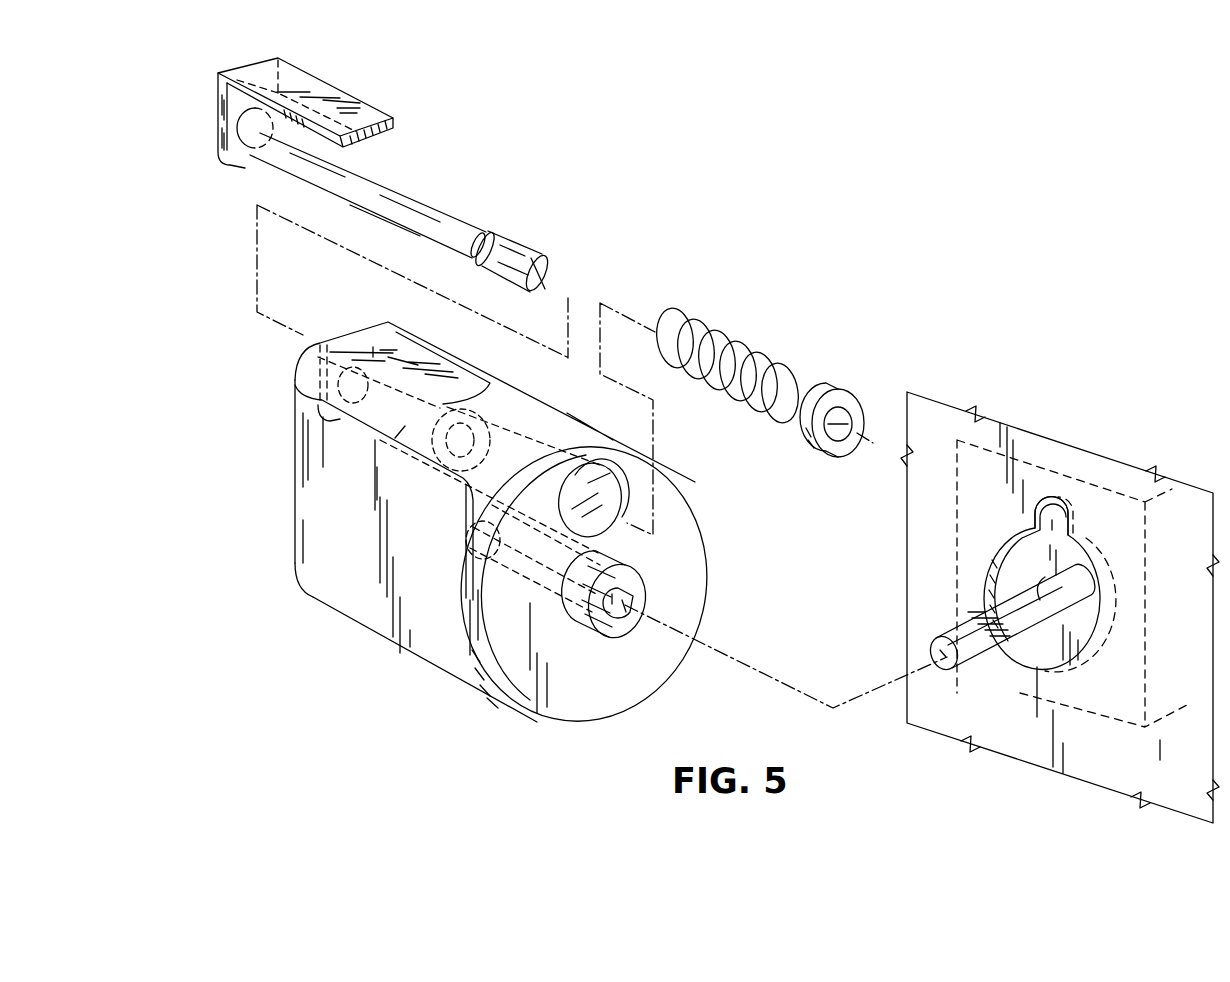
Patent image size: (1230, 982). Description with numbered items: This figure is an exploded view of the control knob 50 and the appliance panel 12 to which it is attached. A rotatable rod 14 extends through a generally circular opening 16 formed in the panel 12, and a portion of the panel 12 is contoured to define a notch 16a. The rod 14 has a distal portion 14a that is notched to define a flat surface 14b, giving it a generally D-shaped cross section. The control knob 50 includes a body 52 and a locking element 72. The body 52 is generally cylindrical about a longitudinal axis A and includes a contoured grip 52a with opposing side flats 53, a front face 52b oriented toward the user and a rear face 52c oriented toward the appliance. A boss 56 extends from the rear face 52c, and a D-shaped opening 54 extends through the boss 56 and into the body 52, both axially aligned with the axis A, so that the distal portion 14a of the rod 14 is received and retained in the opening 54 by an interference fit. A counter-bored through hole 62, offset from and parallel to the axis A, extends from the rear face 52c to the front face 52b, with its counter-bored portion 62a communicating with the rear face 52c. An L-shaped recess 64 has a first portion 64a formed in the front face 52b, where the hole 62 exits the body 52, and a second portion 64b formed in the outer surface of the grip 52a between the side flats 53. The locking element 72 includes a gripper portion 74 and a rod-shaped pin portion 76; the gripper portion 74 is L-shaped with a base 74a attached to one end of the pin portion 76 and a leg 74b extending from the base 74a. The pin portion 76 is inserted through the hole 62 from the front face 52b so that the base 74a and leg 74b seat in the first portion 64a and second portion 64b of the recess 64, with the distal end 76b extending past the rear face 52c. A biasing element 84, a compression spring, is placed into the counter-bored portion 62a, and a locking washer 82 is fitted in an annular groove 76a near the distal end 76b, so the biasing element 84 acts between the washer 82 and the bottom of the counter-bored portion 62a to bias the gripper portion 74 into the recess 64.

The panel 12 is at (943, 423).
The rotatable rod 14 is at (960, 679).
The distal portion 14a is at (983, 653).
The flat surface 14b is at (953, 630).
The opening 16 is at (1000, 537).
The notch 16a is at (1053, 517).
The control knob 50 is at (727, 188).
The body 52 is at (484, 525).
The contoured grip 52a is at (373, 605).
The front face 52b is at (292, 475).
The rear face 52c is at (600, 692).
The opposing side flats 53 is at (363, 572).
The opening 54 is at (632, 595).
The boss 56 is at (640, 572).
The counter-bored through hole 62 is at (410, 428).
The counter-bored portion 62a is at (613, 483).
The L-shaped recess 64 is at (383, 363).
The first portion 64a is at (340, 338).
The second portion 64b is at (430, 372).
The locking element 72 is at (407, 163).
The gripper portion 74 is at (305, 111).
The base 74a is at (220, 113).
The leg 74b is at (367, 107).
The pin portion 76 is at (542, 231).
The annular groove 76a is at (487, 233).
The distal end 76b is at (545, 265).
The locking washer 82 is at (827, 385).
The biasing element 84 is at (745, 338).
The longitudinal axis A is at (703, 643).